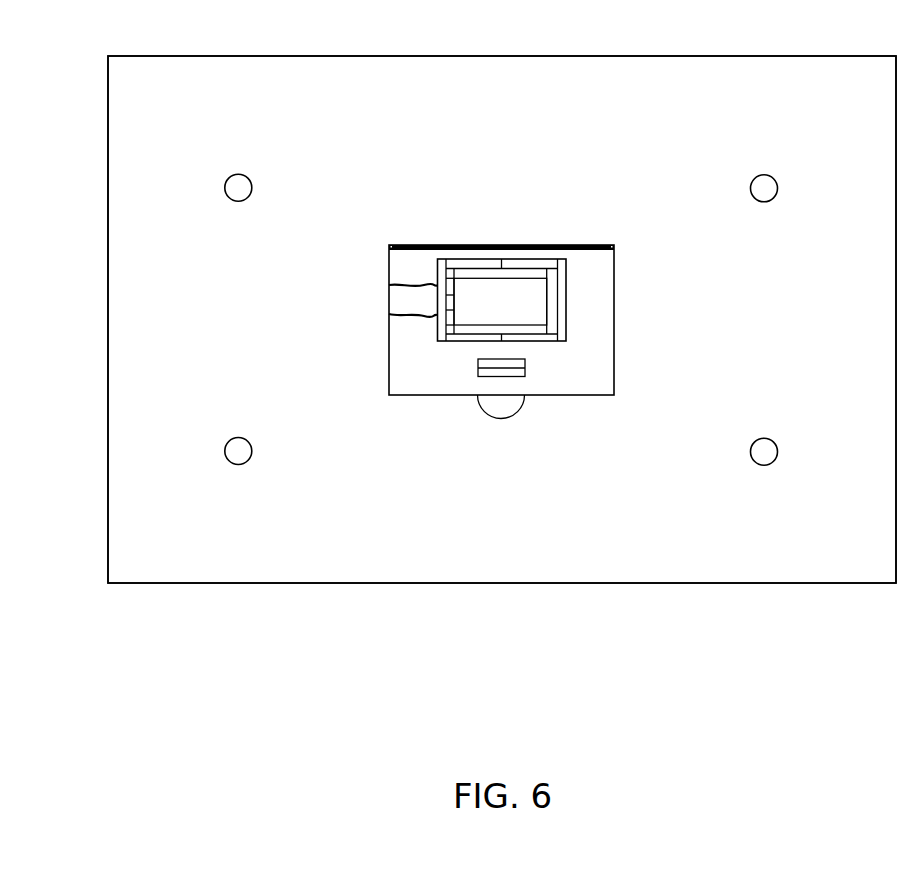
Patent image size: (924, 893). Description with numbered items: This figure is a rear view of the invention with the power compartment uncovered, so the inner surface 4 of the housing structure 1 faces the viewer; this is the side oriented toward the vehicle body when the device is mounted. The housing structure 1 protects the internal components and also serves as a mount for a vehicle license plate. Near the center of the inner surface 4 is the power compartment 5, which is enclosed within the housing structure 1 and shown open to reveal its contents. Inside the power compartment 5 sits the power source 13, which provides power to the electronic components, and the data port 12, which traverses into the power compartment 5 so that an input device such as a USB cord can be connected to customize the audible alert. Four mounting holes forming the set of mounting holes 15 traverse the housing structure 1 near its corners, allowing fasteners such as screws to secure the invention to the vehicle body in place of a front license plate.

The housing structure 1 is at (106, 53).
The inner surface 4 is at (875, 92).
The power compartment 5 is at (406, 382).
The data port 12 is at (478, 372).
The power source 13 is at (531, 330).
The set of mounting holes 15 is at (238, 189).